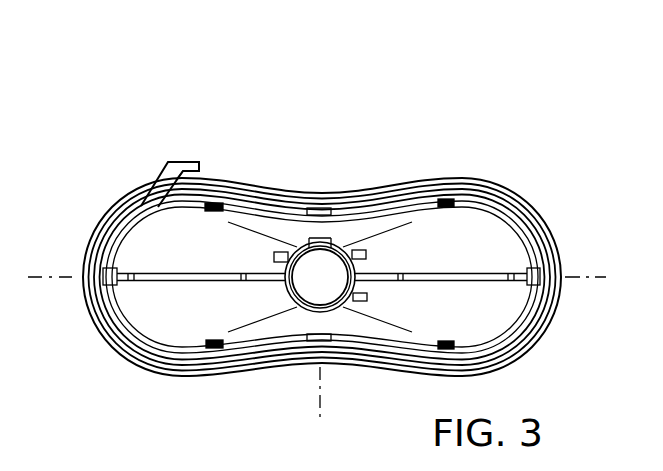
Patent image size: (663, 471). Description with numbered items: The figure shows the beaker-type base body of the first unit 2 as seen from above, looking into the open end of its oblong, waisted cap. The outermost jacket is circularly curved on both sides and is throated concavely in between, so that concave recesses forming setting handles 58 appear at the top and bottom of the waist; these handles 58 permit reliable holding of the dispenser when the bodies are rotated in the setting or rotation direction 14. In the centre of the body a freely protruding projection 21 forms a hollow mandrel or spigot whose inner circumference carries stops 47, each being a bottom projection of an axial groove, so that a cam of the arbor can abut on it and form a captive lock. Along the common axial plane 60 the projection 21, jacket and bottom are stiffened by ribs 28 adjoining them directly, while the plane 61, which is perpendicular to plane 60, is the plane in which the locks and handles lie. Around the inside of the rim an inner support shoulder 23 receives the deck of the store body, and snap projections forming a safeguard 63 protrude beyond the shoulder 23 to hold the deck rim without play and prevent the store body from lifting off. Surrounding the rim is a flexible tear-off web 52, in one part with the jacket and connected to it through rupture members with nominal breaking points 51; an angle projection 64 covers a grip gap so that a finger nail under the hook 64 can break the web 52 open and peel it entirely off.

The first unit 2 is at (106, 202).
The setting or rotation direction 14 is at (246, 318).
The projection 21 is at (358, 252).
The inner support shoulder 23 is at (206, 214).
The ribs 28 is at (252, 270).
The stop 47 is at (320, 246).
The nominal breaking points 51 is at (450, 214).
The tear-off web 52 is at (455, 176).
The setting handles 58 is at (362, 210).
The axial plane 60 is at (68, 270).
The middle or axial plane 61 is at (326, 379).
The safeguard 63 is at (214, 341).
The angle projection 64 is at (186, 163).